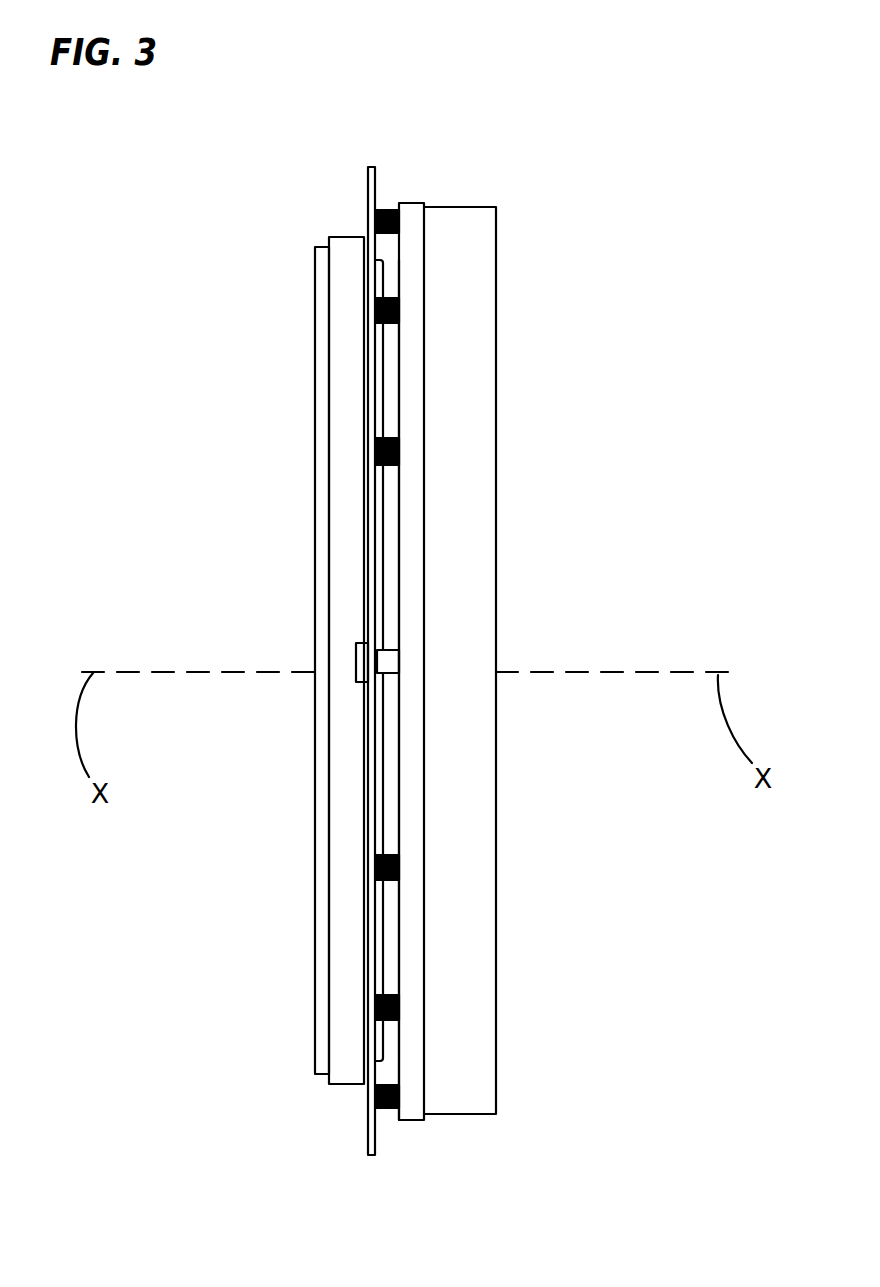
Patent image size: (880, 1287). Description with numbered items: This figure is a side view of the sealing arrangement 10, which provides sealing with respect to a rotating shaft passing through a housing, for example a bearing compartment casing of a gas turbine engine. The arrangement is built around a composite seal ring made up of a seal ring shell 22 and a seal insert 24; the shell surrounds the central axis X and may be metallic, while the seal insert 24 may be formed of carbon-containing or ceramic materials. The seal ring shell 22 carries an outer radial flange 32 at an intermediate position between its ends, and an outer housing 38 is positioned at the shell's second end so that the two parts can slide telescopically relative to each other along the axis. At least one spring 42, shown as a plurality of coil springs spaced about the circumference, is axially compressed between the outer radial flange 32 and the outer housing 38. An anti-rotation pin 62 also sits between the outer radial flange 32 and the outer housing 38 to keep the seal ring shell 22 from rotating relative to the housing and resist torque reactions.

The sealing arrangement 10 is at (633, 183).
The seal ring shell 22 is at (345, 236).
The seal insert 24 is at (314, 305).
The outer radial flange 32 is at (373, 183).
The outer housing 38 is at (468, 203).
The spring 42 is at (388, 234).
The anti-rotation pin 62 is at (387, 655).